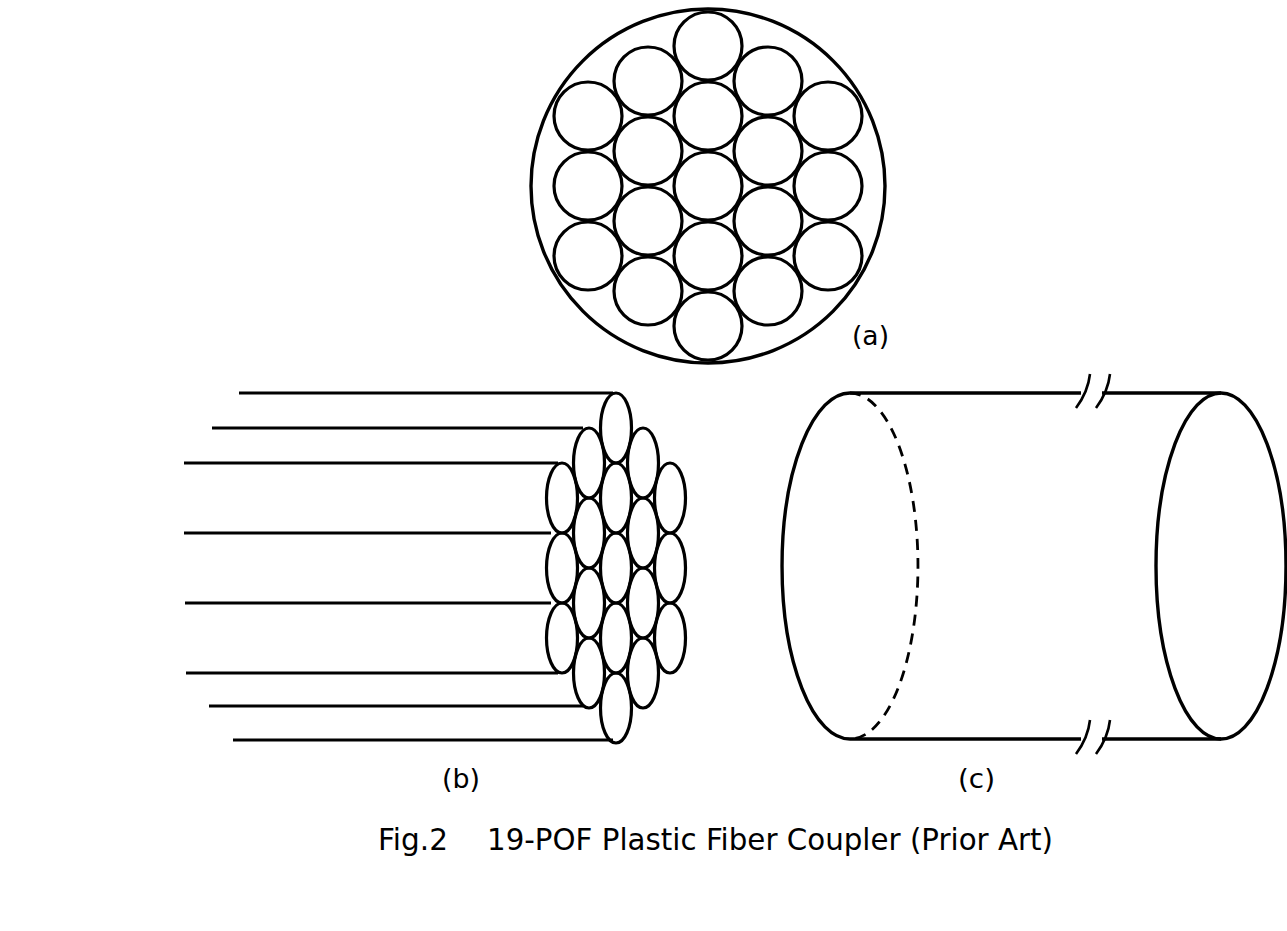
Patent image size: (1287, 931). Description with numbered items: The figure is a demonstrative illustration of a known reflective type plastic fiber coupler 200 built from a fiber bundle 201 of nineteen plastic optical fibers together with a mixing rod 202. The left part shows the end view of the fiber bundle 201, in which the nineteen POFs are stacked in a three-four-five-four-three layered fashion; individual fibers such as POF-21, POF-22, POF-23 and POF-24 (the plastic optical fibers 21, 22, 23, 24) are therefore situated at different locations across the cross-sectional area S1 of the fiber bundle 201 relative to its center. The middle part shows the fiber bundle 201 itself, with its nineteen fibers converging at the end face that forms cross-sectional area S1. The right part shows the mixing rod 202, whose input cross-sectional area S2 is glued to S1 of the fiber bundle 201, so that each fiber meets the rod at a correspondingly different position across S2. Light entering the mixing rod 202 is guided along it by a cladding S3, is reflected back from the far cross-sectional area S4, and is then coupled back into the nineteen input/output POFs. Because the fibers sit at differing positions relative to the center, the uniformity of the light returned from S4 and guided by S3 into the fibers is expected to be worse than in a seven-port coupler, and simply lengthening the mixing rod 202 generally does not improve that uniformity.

The reflective type plastic fiber coupler 200 is at (500, 152).
The fiber bundle 201 is at (353, 390).
The mixing rod 202 is at (1034, 527).
The plastic optical fiber 21 is at (866, 131).
The plastic optical fiber 22 is at (895, 186).
The plastic optical fiber 23 is at (926, 234).
The plastic optical fiber 24 is at (896, 291).
The plastic optical fiber POF-21 is at (713, 177).
The plastic optical fiber POF-22 is at (777, 220).
The plastic optical fiber POF-23 is at (840, 263).
The plastic optical fiber POF-24 is at (777, 295).
The cross-sectional area of fiber bundle S1 is at (616, 569).
The cross-sectional area of mixing rod S2 is at (850, 566).
The cladding S3 is at (1038, 587).
The cross-sectional area of mixing rod S4 is at (1221, 566).